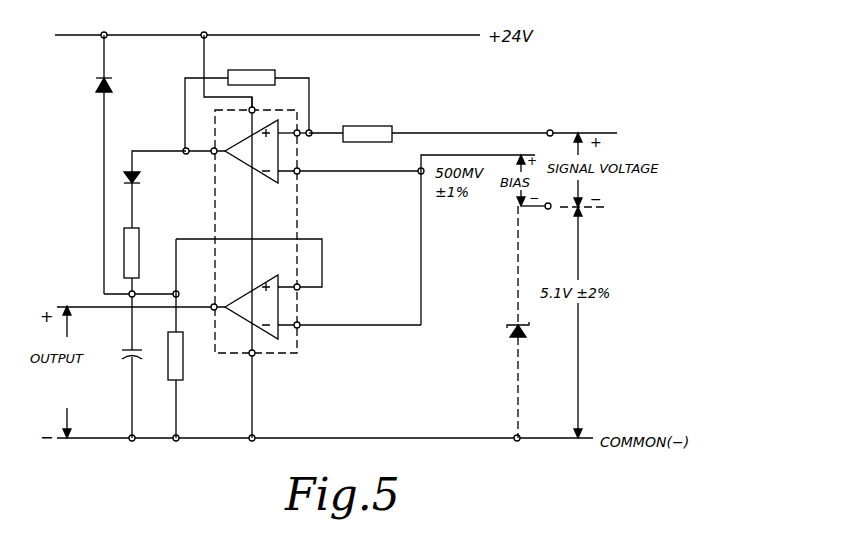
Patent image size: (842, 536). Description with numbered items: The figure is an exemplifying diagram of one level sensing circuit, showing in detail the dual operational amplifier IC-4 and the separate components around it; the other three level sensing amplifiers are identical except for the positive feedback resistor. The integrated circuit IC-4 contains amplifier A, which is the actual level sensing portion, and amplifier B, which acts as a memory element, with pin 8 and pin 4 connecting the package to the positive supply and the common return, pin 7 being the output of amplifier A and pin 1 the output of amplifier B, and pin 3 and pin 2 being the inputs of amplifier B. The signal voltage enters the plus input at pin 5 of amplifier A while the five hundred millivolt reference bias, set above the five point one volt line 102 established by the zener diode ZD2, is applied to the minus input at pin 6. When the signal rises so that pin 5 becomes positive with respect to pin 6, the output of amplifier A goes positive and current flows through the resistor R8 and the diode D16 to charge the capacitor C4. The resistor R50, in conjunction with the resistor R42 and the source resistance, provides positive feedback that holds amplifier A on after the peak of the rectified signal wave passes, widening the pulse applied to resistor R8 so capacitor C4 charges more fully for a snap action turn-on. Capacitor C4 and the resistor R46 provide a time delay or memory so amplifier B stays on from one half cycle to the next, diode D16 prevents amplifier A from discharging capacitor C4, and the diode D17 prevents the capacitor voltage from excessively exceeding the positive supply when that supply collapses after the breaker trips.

The diode D17 is at (97, 80).
The diode D16 is at (142, 177).
The resistor R8 is at (140, 233).
The resistor R50 is at (262, 65).
The resistor R42 is at (372, 120).
The resistor R46 is at (183, 378).
The capacitor C4 is at (128, 349).
The zener diode ZD2 is at (512, 338).
The operational amplifier IC-4 is at (240, 265).
The 5.1 volt line 102 is at (531, 212).
The pin 1 is at (141, 298).
The pin 2 is at (349, 335).
The pin 3 is at (249, 264).
The pin 4 is at (257, 363).
The pin 5 is at (295, 125).
The pin 6 is at (351, 163).
The pin 7 is at (204, 142).
The pin 8 is at (258, 102).